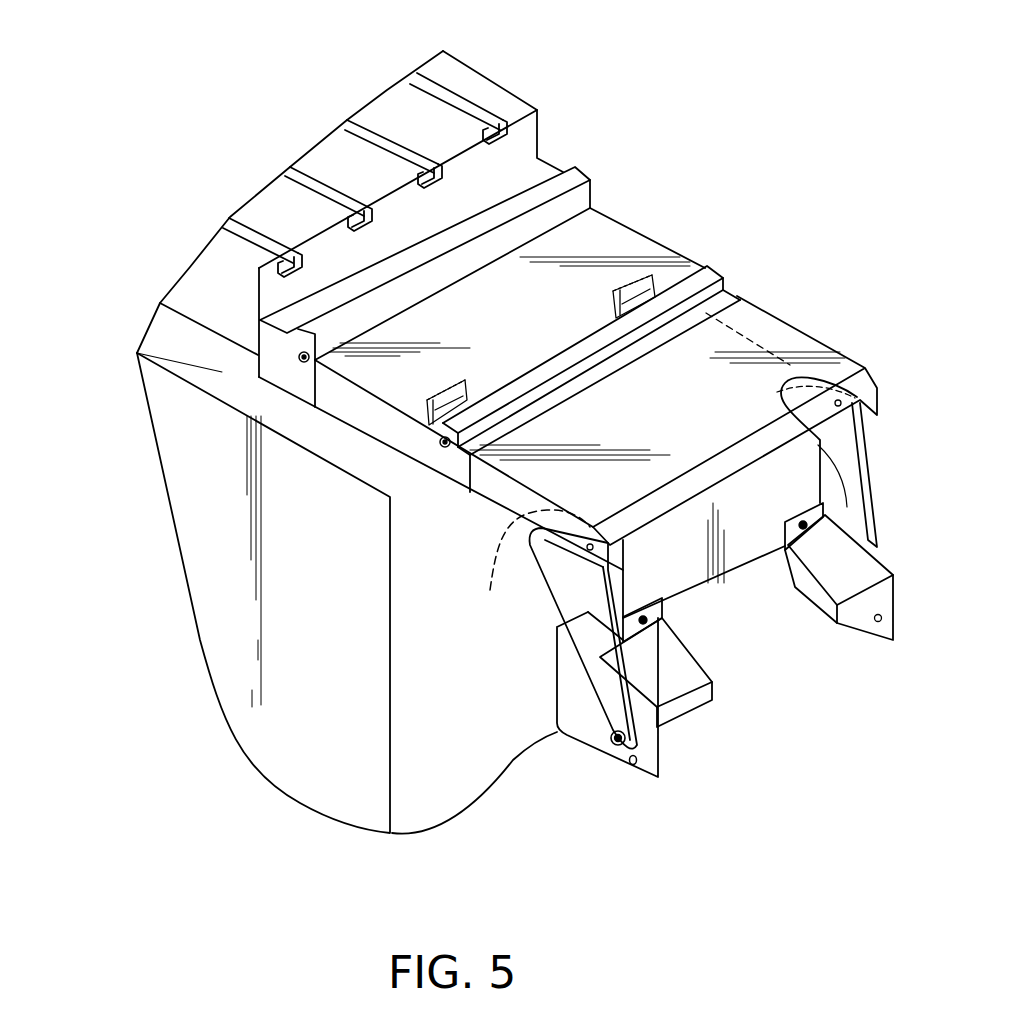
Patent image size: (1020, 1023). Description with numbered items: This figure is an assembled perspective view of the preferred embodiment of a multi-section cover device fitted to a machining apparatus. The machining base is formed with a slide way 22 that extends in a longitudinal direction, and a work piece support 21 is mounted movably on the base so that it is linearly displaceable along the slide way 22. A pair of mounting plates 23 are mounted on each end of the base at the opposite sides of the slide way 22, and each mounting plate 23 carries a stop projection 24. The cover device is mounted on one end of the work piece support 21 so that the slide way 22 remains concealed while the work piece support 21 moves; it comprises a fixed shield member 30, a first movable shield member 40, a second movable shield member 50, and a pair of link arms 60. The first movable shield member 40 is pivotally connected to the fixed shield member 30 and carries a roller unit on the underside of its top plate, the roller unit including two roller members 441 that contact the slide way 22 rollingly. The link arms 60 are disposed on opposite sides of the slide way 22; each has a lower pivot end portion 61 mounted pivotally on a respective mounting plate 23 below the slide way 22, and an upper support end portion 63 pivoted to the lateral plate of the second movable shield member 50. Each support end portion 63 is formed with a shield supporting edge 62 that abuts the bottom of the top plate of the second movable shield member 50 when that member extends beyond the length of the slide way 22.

The work piece support 21 is at (483, 82).
The slide way 22 is at (137, 353).
The mounting plate 23 is at (612, 744).
The stop projection 24 is at (630, 765).
The fixed shield member 30 is at (555, 166).
The first movable shield member 40 is at (612, 218).
The roller member 441 is at (717, 264).
The second movable shield member 50 is at (789, 315).
The link arm 60 is at (862, 470).
The lower pivot end portion 61 is at (577, 728).
The shield supporting edge 62 is at (497, 556).
The support end portion 63 is at (560, 557).